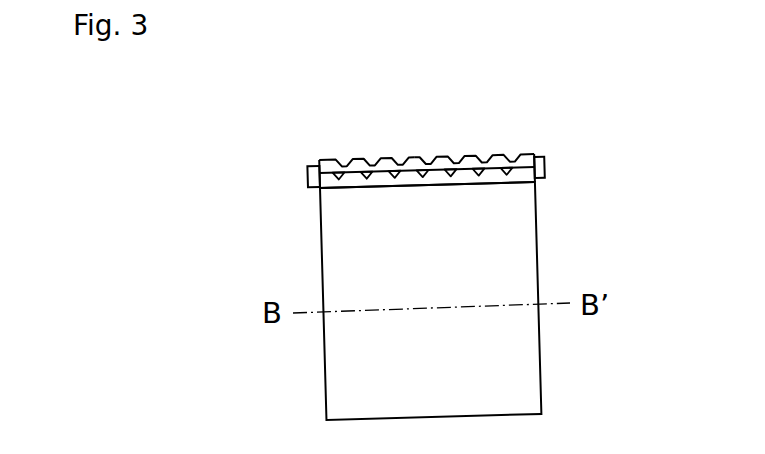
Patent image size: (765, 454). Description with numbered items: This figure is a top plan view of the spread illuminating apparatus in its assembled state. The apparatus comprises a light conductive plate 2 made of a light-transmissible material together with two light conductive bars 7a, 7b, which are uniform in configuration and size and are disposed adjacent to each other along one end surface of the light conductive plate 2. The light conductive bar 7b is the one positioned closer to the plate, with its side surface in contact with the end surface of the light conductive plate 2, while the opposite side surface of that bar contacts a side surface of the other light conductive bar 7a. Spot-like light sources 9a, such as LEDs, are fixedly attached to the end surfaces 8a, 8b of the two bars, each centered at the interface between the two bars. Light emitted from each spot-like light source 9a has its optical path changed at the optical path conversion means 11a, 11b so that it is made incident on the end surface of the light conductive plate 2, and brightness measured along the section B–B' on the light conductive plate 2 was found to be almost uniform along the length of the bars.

The light conductive plate 2 is at (523, 224).
The light conductive bar 7a is at (438, 158).
The light conductive bar 7b is at (497, 167).
The end surface 8a is at (316, 163).
The end surface 8b is at (317, 190).
The spot-like light source 9a is at (308, 167).
The optical path conversion means 11a is at (353, 157).
The optical path conversion means 11b is at (377, 160).